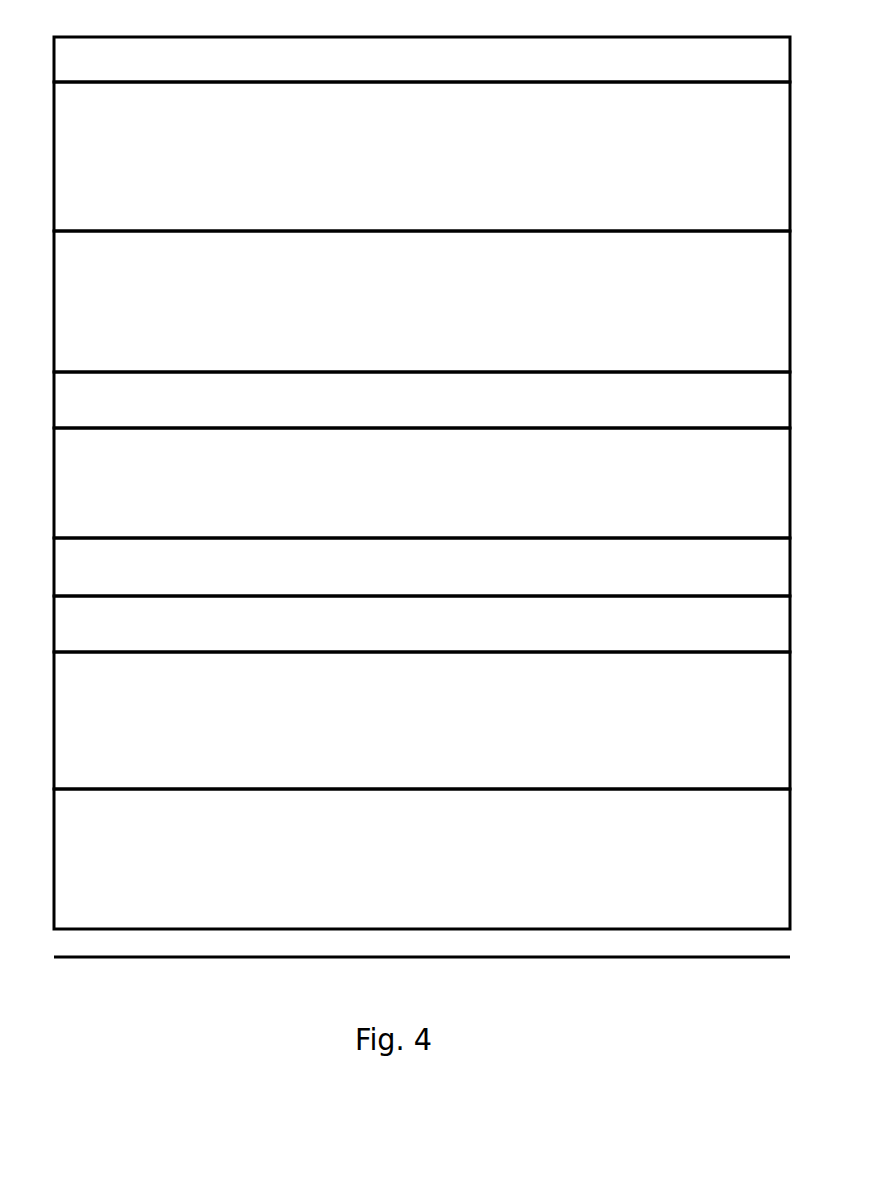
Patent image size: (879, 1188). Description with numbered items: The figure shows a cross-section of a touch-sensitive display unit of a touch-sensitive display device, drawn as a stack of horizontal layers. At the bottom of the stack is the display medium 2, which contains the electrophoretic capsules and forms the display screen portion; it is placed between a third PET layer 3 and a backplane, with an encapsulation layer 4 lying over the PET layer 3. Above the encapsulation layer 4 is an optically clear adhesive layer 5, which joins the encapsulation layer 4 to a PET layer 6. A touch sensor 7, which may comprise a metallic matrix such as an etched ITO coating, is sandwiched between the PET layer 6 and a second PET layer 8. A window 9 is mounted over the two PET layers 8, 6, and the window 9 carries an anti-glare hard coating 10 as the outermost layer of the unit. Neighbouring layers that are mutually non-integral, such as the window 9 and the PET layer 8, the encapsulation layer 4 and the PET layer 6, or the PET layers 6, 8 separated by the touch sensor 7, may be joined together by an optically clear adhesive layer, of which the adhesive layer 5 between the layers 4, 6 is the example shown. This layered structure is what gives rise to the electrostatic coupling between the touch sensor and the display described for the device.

The display medium 2 is at (422, 859).
The third PET layer 3 is at (422, 720).
The encapsulation layer 4 is at (422, 624).
The adhesive layer 5 is at (422, 567).
The PET layer 6 is at (422, 483).
The touch sensor 7 is at (422, 400).
The PET layer 8 is at (422, 301).
The window 9 is at (422, 156).
The anti-glare hard coating 10 is at (422, 59).